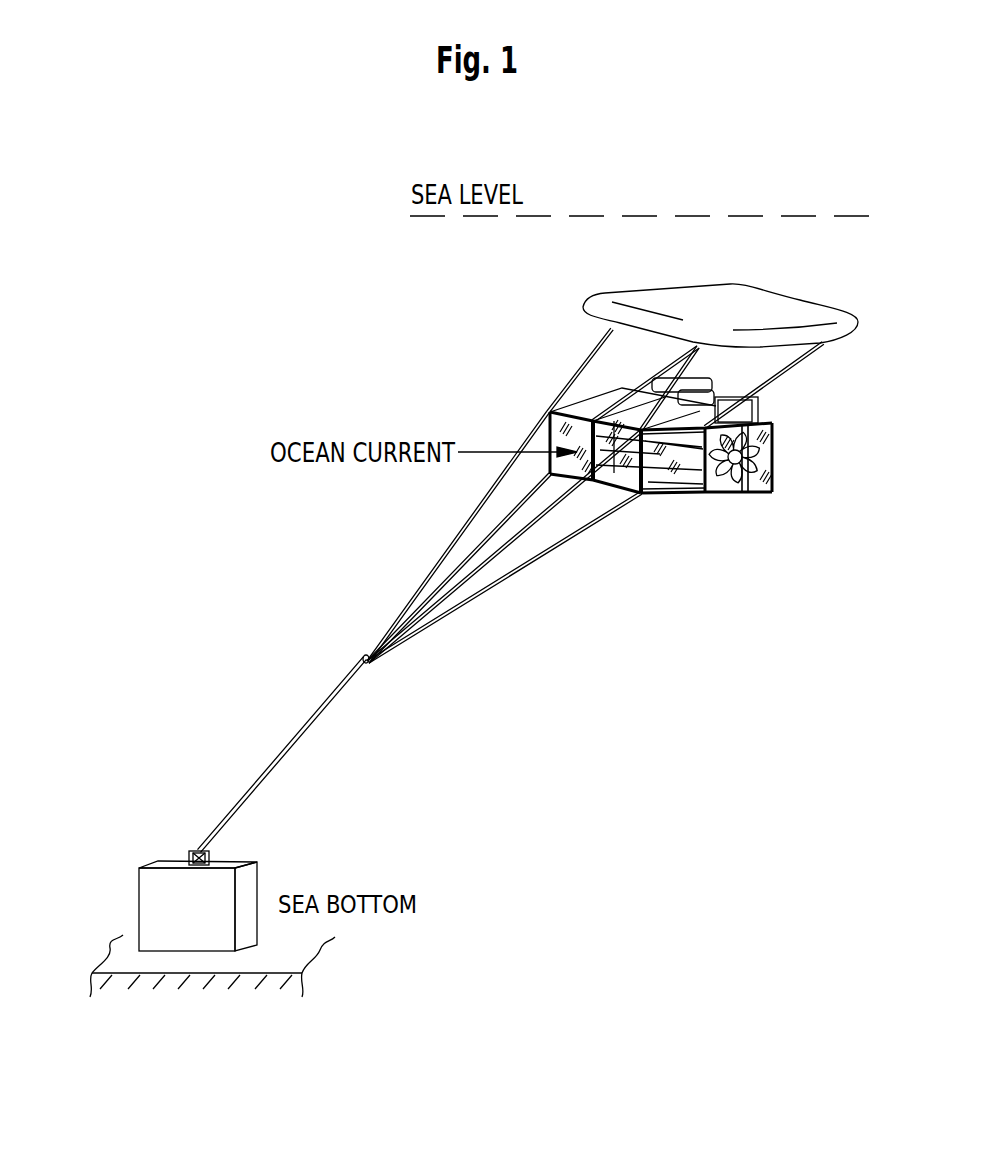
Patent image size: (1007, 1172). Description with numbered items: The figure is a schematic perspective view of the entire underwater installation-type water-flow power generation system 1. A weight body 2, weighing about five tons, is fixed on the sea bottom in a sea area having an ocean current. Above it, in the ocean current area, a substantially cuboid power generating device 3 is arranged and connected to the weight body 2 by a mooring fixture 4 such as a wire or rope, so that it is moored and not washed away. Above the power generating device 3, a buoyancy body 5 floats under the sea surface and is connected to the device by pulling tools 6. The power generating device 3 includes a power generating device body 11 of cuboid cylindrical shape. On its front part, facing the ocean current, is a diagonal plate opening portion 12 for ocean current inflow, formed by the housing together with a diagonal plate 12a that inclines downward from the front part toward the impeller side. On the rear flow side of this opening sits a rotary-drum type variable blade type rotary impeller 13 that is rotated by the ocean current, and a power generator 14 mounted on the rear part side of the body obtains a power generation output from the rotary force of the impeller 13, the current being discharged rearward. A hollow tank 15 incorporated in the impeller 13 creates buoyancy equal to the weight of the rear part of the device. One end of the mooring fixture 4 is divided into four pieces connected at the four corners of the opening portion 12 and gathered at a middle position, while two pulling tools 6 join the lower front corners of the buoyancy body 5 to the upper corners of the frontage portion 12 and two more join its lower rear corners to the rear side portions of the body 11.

The underwater installation-type water-flow power generation system 1 is at (434, 377).
The weight body 2 is at (250, 888).
The power generating device 3 is at (669, 482).
The mooring fixture 4 is at (362, 659).
The buoyancy body 5 is at (590, 298).
The pulling tool 6 is at (591, 350).
The power generating device body 11 is at (789, 464).
The diagonal plate opening portion 12 is at (548, 412).
The diagonal plate 12a is at (666, 465).
The variable blade type rotary impeller 13 is at (719, 500).
The power generator 14 is at (706, 380).
The hollow tank 15 is at (742, 494).